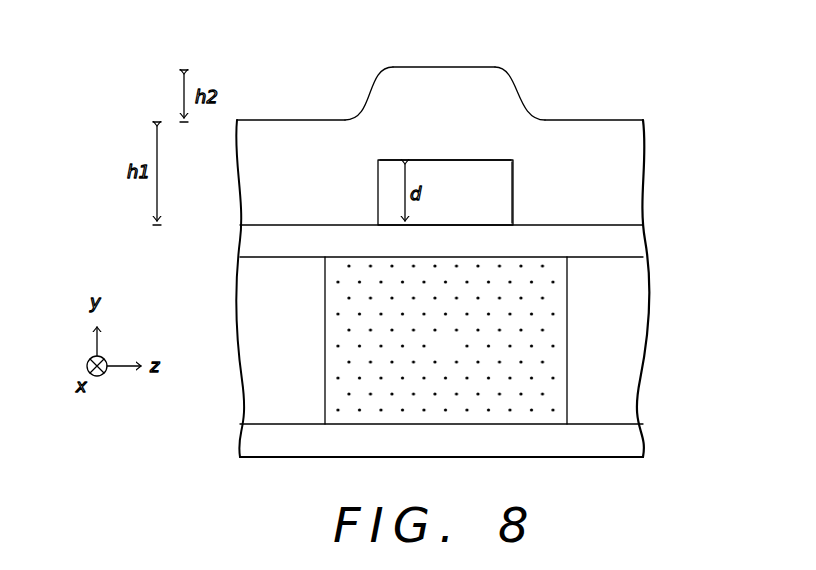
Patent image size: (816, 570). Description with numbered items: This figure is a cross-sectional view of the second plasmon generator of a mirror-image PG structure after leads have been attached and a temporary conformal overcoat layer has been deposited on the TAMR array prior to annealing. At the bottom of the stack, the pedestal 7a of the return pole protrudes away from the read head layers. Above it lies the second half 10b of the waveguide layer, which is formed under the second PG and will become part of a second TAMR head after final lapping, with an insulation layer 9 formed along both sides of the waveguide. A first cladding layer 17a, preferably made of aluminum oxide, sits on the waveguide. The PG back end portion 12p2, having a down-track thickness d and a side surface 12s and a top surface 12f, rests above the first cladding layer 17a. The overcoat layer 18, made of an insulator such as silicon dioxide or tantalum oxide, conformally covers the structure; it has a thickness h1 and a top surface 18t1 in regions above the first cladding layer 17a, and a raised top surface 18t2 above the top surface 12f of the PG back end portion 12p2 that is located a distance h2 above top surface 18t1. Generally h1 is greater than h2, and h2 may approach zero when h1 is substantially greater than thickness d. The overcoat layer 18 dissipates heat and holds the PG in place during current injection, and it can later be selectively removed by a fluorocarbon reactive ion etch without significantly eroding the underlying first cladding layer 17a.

The overcoat layer 18 is at (253, 170).
The top surface of overcoat layer 18t1 is at (290, 120).
The top surface of overcoat layer above PG back end portion 18t2 is at (443, 78).
The side surface of peg 12s is at (378, 200).
The top surface of PG back end portion 12f is at (458, 160).
The back end portion of second plasmon generator 12p2 is at (492, 192).
The first cladding layer 17a is at (258, 240).
The second half of waveguide layer 10b is at (340, 331).
The insulation layer 9 is at (253, 402).
The pedestal 7a is at (627, 440).